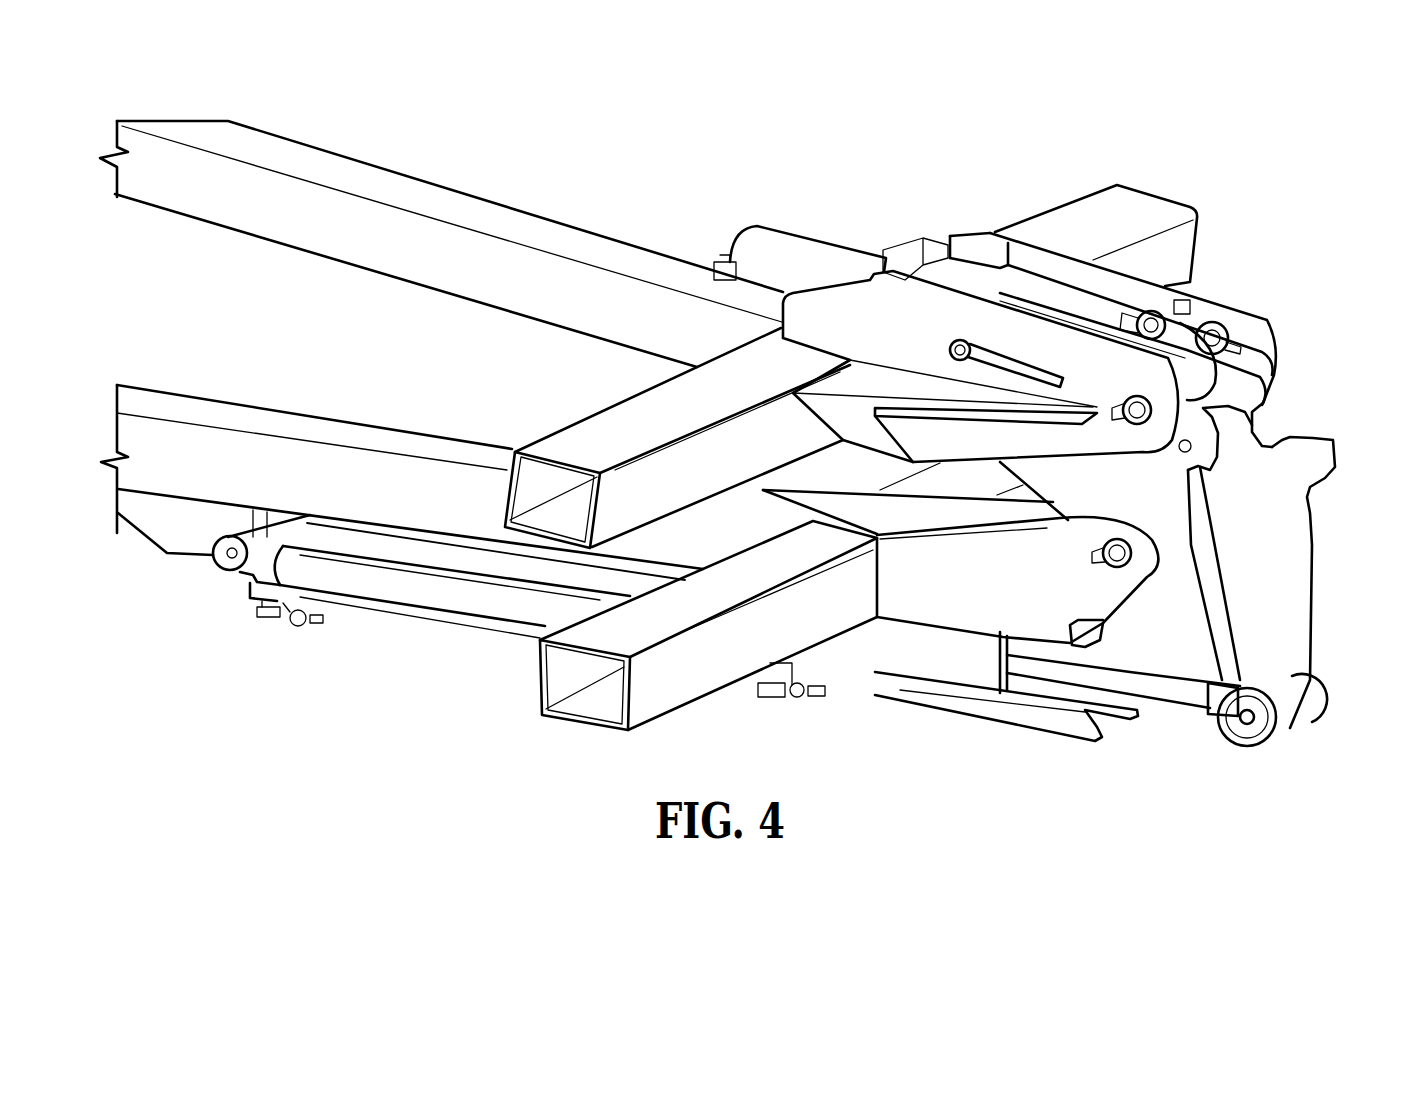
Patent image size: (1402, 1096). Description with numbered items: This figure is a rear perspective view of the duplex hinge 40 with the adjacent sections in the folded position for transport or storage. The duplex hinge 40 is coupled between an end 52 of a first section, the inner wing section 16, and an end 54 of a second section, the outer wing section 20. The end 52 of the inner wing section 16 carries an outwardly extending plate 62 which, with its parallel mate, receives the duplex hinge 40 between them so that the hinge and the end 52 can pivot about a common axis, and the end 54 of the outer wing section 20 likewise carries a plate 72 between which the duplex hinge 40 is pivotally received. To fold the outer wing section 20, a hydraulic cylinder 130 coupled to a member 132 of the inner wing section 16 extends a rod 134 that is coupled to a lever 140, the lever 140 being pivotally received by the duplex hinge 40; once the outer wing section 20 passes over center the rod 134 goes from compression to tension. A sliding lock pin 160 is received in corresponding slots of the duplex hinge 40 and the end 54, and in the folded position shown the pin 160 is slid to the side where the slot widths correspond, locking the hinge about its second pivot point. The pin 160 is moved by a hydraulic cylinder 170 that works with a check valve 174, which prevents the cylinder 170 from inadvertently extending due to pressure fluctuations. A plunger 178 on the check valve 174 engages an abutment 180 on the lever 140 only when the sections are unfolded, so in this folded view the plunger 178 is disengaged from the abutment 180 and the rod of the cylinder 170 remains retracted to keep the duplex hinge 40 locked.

The inner wing section 16 is at (300, 464).
The outer wing section 20 is at (430, 247).
The duplex hinge 40 is at (1286, 356).
The end of the inner wing section 52 is at (970, 582).
The end of the outer wing section 54 is at (917, 353).
The plate 62 is at (1033, 597).
The plate 72 is at (845, 327).
The hydraulic cylinder 130 is at (433, 590).
The member 132 is at (190, 537).
The rod 134 is at (1185, 693).
The lever 140 is at (1292, 597).
The lock pin 160 is at (962, 340).
The hydraulic cylinder 170 is at (757, 252).
The check valve 174 is at (1155, 322).
The plunger 178 is at (1232, 342).
The abutment 180 is at (1317, 457).